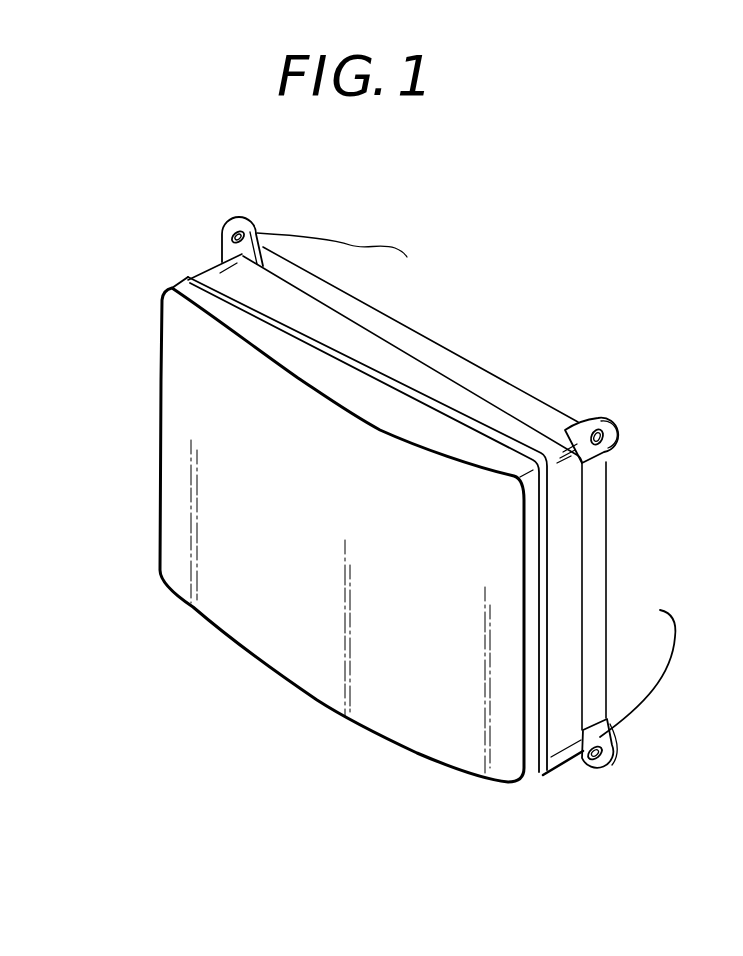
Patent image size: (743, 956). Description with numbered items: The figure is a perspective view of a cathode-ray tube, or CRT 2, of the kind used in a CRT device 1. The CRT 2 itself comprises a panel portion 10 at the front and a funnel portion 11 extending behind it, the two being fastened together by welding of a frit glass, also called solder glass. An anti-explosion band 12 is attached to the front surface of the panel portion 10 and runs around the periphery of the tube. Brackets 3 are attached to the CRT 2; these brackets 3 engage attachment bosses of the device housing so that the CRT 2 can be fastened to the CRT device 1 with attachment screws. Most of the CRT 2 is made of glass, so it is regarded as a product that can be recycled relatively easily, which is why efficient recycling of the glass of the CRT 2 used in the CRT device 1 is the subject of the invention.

The CRT device 1 is at (498, 291).
The CRT 2 is at (419, 756).
The brackets 3 is at (250, 214).
The panel portion 10 is at (333, 672).
The funnel portion 11 is at (630, 697).
The anti-explosion band 12 is at (573, 600).